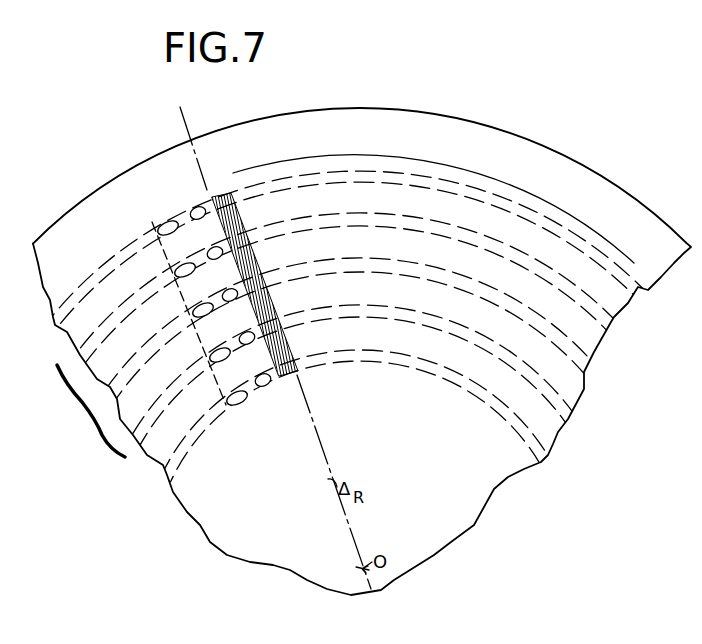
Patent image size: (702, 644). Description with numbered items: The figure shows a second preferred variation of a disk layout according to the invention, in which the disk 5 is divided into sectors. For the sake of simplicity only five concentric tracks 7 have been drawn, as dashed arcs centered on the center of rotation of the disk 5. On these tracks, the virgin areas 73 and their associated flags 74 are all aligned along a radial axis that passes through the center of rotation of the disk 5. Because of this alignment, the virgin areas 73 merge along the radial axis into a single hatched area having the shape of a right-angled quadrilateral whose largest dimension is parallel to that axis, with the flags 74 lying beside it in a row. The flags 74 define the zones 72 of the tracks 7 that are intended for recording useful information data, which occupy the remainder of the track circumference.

The disk 5 is at (494, 477).
The concentric tracks 7 is at (91, 411).
The zones 72 is at (449, 160).
The virgin areas 73 is at (215, 173).
The flags 74 is at (193, 191).